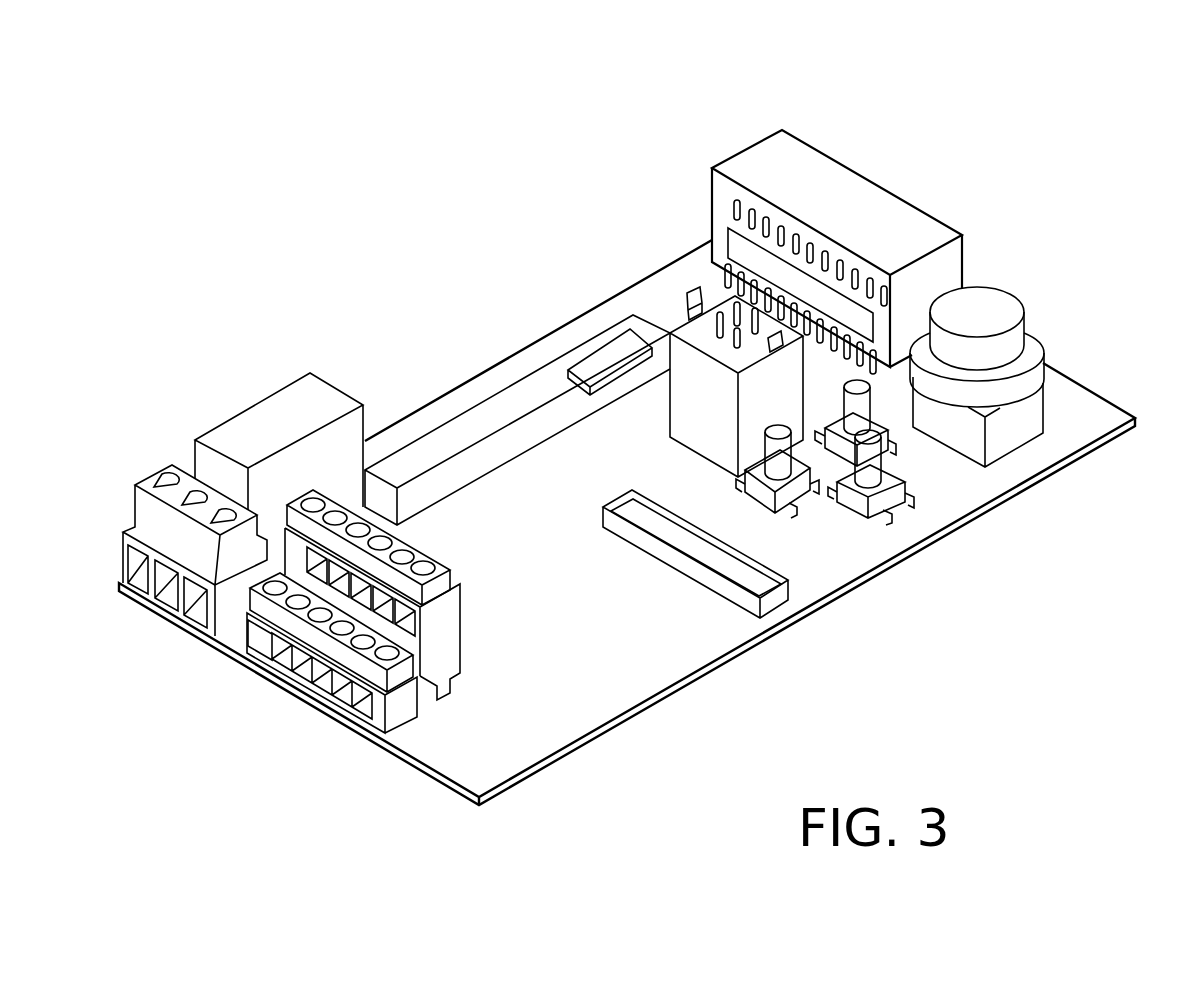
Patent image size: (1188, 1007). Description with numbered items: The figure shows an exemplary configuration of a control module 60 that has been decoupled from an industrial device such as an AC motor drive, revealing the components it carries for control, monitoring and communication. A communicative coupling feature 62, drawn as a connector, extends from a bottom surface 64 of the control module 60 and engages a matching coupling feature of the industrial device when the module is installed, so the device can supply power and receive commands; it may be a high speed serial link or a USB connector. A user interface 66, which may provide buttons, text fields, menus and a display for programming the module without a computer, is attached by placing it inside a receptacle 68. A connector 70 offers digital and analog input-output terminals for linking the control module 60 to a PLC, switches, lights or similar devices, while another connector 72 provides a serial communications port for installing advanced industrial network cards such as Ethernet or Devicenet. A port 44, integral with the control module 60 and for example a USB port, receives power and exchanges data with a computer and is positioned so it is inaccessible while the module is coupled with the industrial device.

The control module 60 is at (962, 108).
The port 44 is at (692, 288).
The communicative coupling feature 62 is at (515, 404).
The bottom surface 64 is at (722, 698).
The user interface 66 is at (843, 165).
The receptacle 68 is at (868, 265).
The connector 70 is at (280, 638).
The connector 72 is at (760, 567).